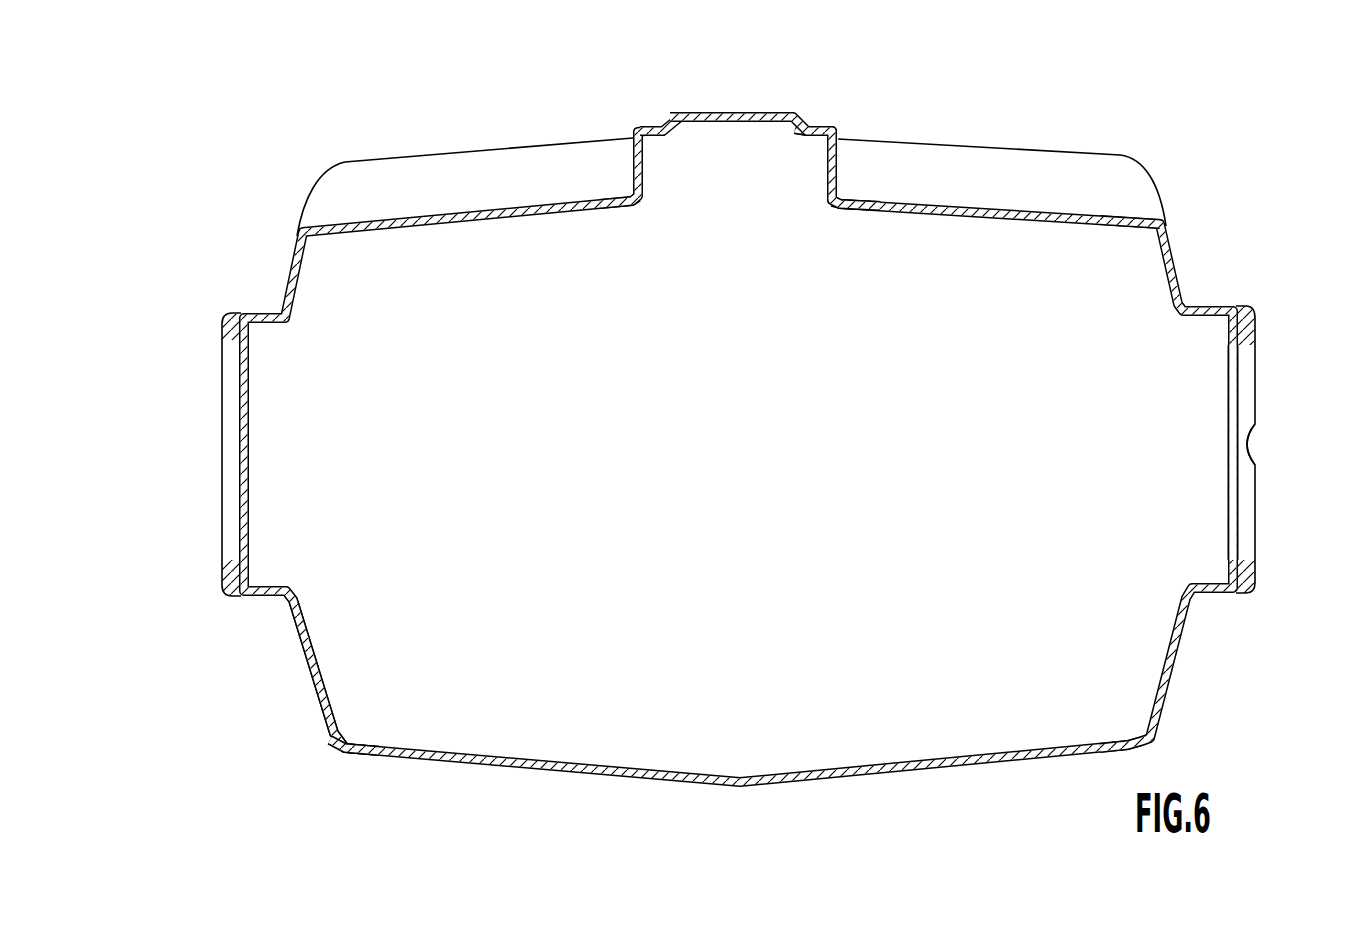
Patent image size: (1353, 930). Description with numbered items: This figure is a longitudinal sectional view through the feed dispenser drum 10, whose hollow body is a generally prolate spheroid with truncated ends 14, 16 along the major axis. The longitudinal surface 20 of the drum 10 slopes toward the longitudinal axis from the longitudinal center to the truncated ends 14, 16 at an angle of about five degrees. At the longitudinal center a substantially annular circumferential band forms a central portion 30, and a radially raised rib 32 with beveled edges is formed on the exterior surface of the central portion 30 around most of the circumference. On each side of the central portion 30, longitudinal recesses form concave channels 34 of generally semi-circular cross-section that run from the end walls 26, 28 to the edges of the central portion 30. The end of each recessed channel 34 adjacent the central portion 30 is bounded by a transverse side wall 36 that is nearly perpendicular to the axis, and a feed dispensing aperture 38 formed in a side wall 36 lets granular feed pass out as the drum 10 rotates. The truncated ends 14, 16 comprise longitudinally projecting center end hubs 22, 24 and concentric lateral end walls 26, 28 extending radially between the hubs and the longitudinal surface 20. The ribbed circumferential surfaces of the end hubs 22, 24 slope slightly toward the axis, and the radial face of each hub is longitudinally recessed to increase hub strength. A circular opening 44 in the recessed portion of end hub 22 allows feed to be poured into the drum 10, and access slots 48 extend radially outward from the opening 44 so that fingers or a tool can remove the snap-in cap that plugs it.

The drum 10 is at (746, 424).
The truncated end 14 is at (1179, 683).
The truncated end 16 is at (298, 676).
The longitudinal surface 20 is at (410, 757).
The end hub 22 is at (1243, 315).
The end hub 24 is at (225, 322).
The lateral end wall 26 is at (1178, 268).
The lateral end wall 28 is at (292, 628).
The central portion 30 is at (655, 129).
The radially raised rib 32 is at (721, 113).
The recessed channel 34 is at (386, 193).
The side wall 36 is at (632, 196).
The feed dispensing aperture 38 is at (836, 160).
The circular opening 44 is at (1232, 393).
The access slot 48 is at (1244, 458).